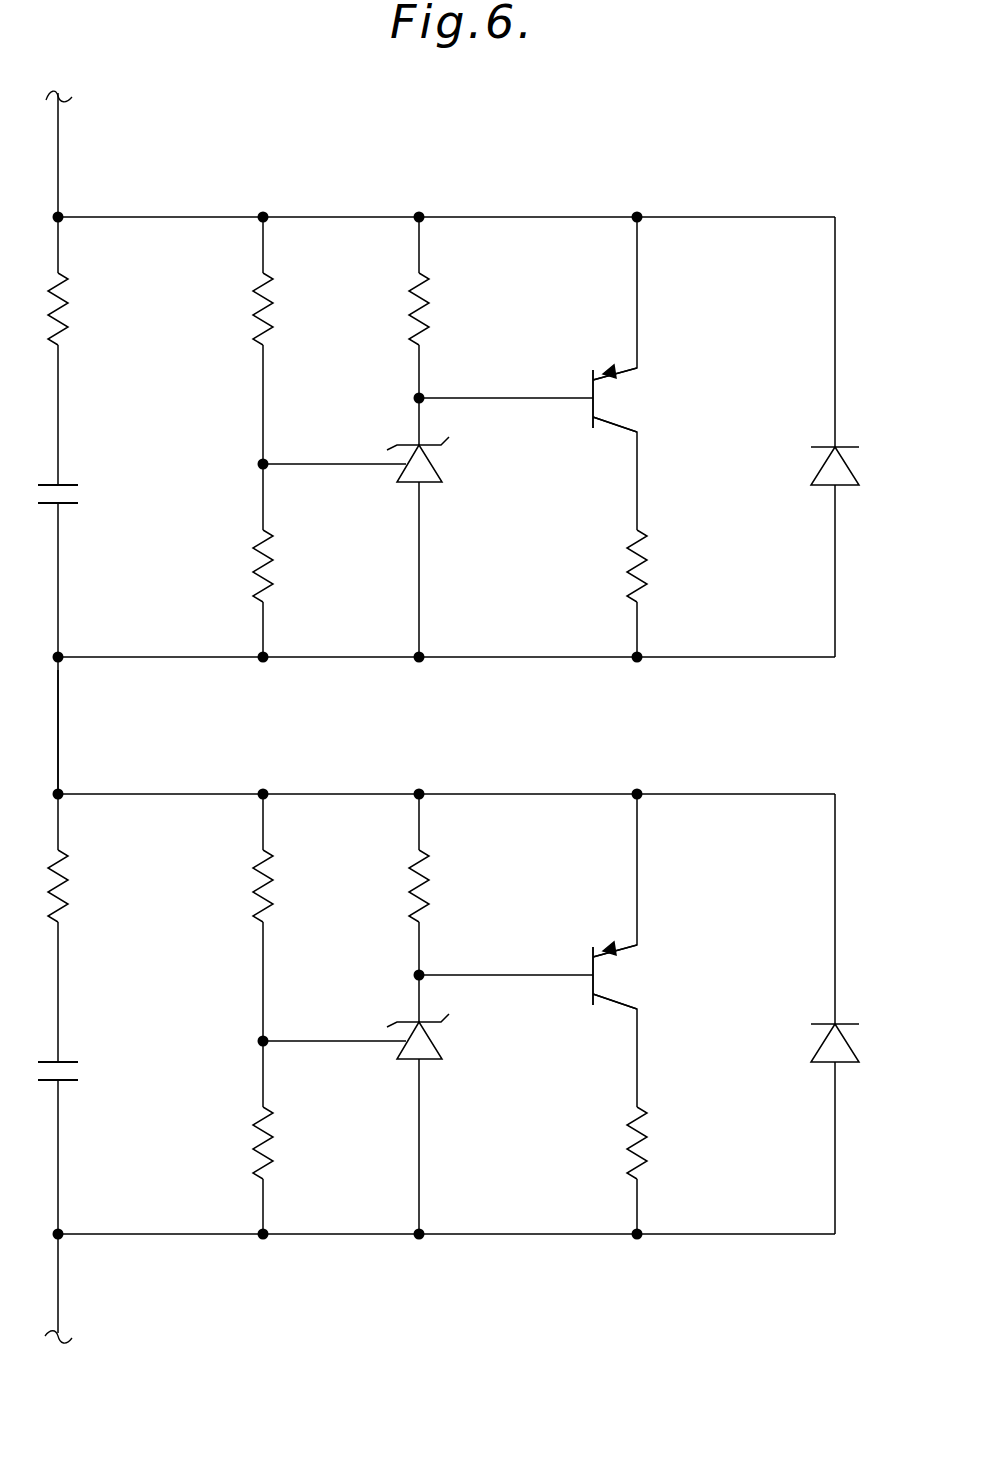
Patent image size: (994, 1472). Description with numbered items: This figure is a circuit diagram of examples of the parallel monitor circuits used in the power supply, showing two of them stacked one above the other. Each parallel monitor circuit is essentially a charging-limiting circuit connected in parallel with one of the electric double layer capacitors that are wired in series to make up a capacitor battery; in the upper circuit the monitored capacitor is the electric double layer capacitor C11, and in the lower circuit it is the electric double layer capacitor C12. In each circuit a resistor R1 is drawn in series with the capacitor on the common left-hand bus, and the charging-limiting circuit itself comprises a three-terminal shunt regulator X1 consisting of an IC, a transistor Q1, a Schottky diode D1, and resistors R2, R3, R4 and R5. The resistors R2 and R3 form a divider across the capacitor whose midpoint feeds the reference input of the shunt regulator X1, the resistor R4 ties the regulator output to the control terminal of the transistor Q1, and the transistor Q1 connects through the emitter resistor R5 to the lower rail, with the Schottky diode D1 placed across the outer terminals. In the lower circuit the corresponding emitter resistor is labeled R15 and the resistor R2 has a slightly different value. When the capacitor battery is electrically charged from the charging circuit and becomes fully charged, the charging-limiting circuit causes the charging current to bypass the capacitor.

The resistor R1 (10m) R1 is at (97, 597).
The resistor R2 is at (304, 597).
The resistor R3 is at (304, 854).
The resistor R4 is at (450, 597).
The resistor R5 is at (660, 566).
The resistor R15 (2) R15 is at (670, 1143).
The electric double layer capacitor C11 is at (103, 495).
The electric double layer capacitor C12 is at (100, 1072).
The three-terminal shunt regulator X1 is at (468, 759).
The transistor Q1 is at (601, 668).
The Schottky diode D1 is at (867, 754).